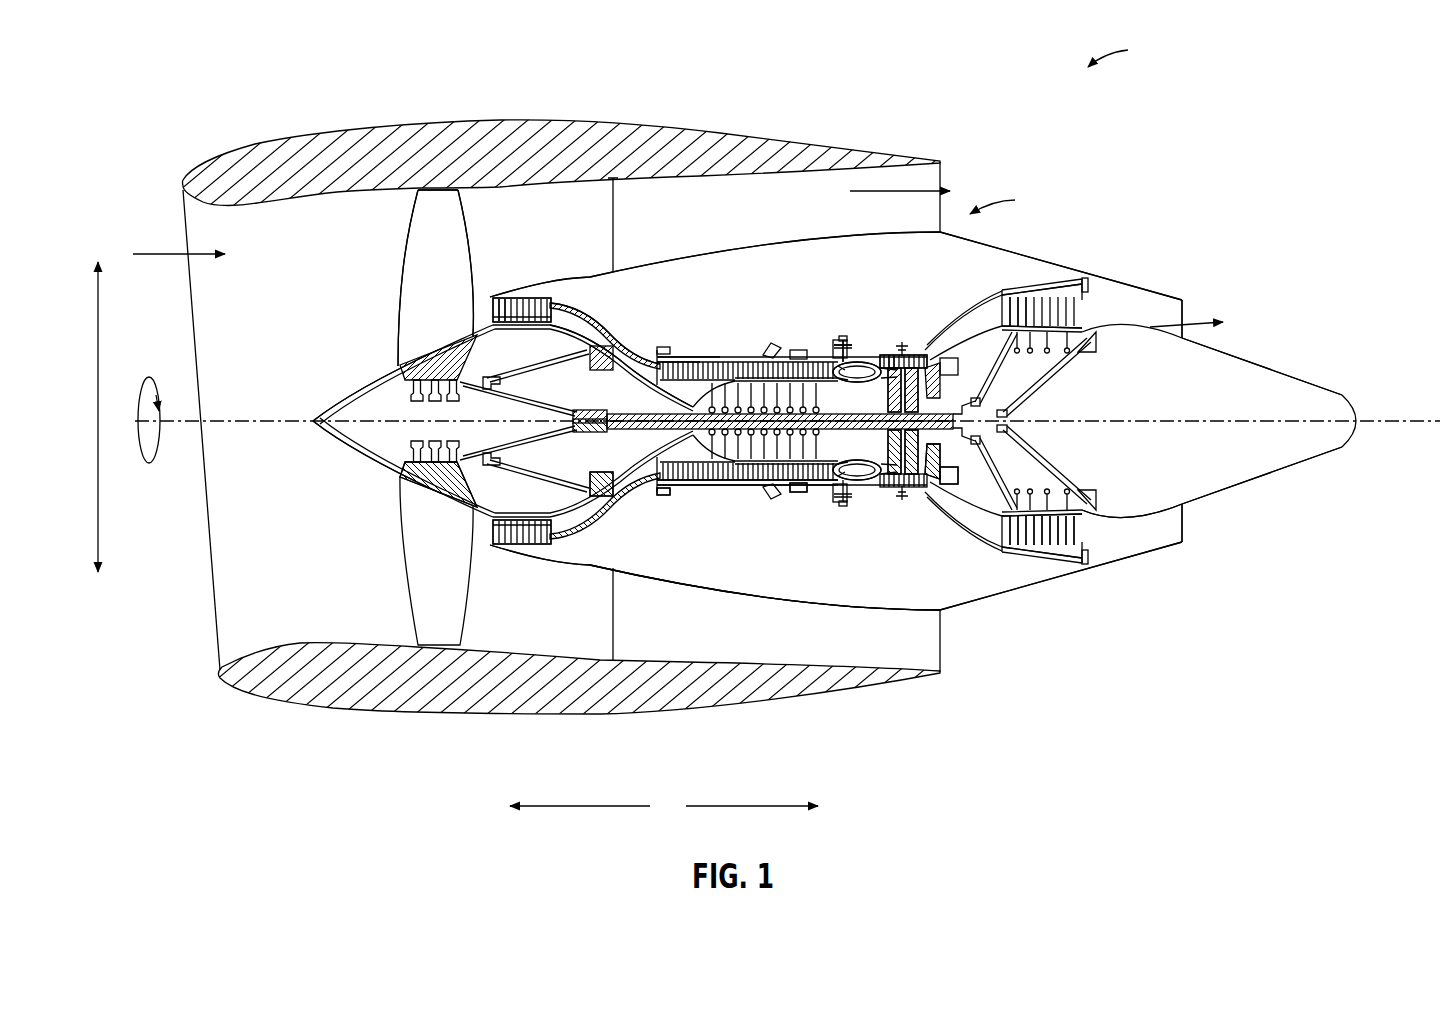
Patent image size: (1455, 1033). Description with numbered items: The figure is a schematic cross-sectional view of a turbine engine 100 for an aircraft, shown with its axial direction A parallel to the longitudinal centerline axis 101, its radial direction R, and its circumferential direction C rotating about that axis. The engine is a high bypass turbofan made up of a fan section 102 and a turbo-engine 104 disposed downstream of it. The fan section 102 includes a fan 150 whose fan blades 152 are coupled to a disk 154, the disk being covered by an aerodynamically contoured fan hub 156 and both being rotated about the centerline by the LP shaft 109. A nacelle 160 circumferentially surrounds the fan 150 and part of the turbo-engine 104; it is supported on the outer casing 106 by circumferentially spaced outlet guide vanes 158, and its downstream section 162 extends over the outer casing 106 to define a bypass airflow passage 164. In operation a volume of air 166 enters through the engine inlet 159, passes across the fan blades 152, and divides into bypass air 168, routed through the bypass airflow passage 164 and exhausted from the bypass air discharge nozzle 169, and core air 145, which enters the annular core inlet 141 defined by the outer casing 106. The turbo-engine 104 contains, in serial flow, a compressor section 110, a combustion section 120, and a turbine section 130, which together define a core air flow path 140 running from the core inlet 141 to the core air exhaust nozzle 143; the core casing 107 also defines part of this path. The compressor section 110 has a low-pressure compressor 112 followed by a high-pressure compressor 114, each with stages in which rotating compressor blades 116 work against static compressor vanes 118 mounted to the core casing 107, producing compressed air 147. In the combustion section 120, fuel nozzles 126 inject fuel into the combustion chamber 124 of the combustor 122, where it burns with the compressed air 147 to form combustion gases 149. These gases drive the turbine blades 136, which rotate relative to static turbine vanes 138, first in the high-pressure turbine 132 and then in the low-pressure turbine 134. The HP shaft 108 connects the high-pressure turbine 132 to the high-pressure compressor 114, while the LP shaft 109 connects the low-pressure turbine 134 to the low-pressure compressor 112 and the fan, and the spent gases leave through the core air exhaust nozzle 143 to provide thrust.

The turbine engine 100 is at (1129, 50).
The longitudinal centerline axis 101 is at (1395, 420).
The fan section 102 is at (275, 252).
The turbo-engine 104 is at (750, 185).
The outer casing 106 is at (875, 613).
The core casing 107 is at (631, 362).
The high-pressure shaft 108 is at (828, 334).
The low-pressure shaft 109 is at (953, 416).
The compressor section 110 is at (748, 613).
The low-pressure compressor 112 is at (622, 645).
The high-pressure compressor 114 is at (751, 493).
The compressor blades 116 is at (524, 294).
The compressor vanes 118 is at (500, 296).
The combustion section 120 is at (849, 510).
The combustor 122 is at (865, 350).
The combustion chamber 124 is at (880, 395).
The fuel nozzles 126 is at (842, 340).
The turbine section 130 is at (1100, 633).
The high-pressure turbine 132 is at (908, 511).
The low-pressure turbine 134 is at (1040, 571).
The turbine blades 136 is at (897, 353).
The turbine vanes 138 is at (870, 353).
The core air flow path 140 is at (648, 491).
The core inlet 141 is at (490, 530).
The core air exhaust nozzle 143 is at (1197, 525).
The core air 145 is at (613, 500).
The compressed air 147 is at (691, 491).
The combustion gases 149 is at (963, 530).
The fan 150 is at (323, 331).
The fan blades 152 is at (425, 595).
The disk 154 is at (430, 484).
The fan hub 156 is at (343, 397).
The outlet guide vanes 158 is at (597, 241).
The engine inlet 159 is at (242, 600).
The nacelle 160 is at (447, 713).
The downstream section 162 is at (826, 158).
The bypass airflow passage 164 is at (829, 206).
The volume of air 166 is at (158, 253).
The bypass air 168 is at (918, 188).
The bypass air discharge nozzle 169 is at (1012, 197).
The radial direction R is at (98, 417).
The circumferential direction C is at (153, 463).
The axial direction A is at (664, 806).